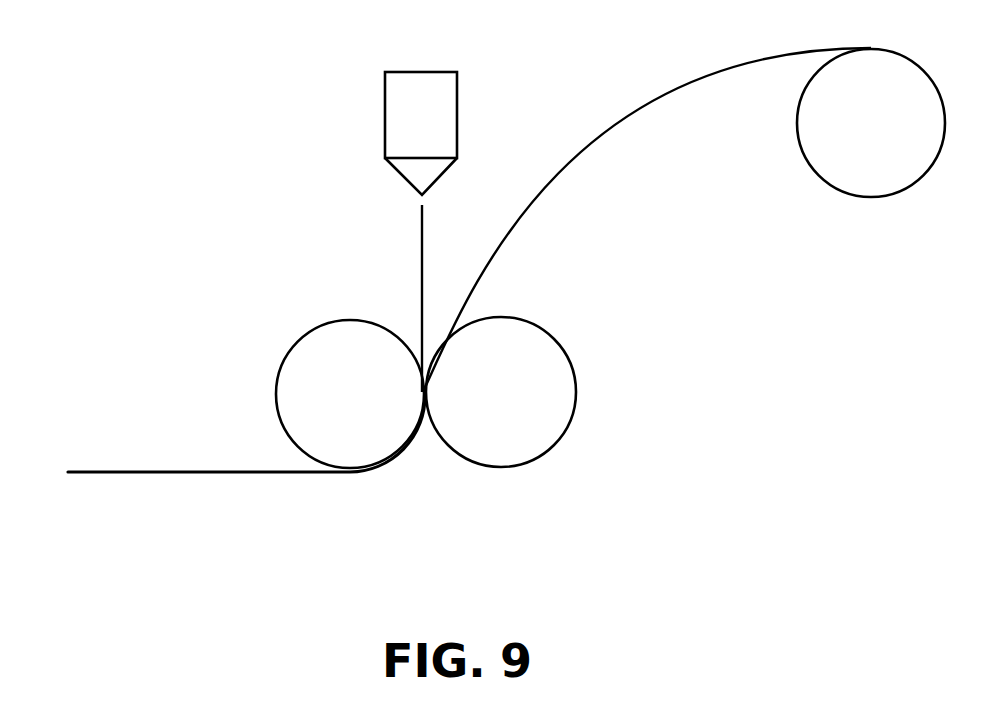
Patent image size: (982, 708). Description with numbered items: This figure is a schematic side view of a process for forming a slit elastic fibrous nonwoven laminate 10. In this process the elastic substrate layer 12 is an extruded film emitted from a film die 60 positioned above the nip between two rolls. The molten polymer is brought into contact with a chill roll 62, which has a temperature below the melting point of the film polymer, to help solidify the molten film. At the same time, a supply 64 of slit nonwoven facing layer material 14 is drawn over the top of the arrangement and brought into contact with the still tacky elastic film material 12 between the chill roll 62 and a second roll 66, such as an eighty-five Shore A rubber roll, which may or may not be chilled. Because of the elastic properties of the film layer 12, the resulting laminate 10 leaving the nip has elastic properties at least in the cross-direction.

The laminate 10 is at (175, 485).
The elastic substrate layer 12 is at (412, 328).
The slit nonwoven facing layer material 14 is at (598, 112).
The film die 60 is at (388, 116).
The chill roll 62 is at (302, 367).
The supply 64 is at (890, 175).
The second roll 66 is at (537, 445).